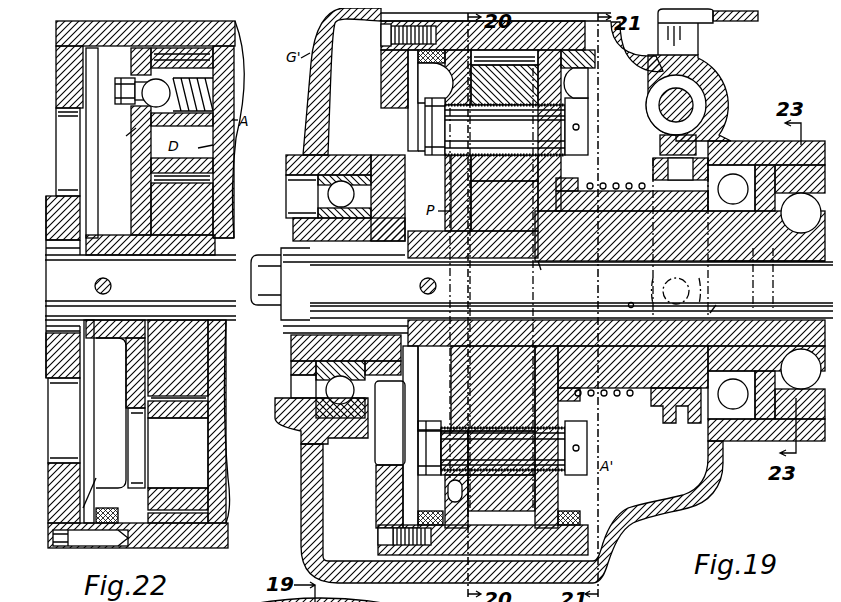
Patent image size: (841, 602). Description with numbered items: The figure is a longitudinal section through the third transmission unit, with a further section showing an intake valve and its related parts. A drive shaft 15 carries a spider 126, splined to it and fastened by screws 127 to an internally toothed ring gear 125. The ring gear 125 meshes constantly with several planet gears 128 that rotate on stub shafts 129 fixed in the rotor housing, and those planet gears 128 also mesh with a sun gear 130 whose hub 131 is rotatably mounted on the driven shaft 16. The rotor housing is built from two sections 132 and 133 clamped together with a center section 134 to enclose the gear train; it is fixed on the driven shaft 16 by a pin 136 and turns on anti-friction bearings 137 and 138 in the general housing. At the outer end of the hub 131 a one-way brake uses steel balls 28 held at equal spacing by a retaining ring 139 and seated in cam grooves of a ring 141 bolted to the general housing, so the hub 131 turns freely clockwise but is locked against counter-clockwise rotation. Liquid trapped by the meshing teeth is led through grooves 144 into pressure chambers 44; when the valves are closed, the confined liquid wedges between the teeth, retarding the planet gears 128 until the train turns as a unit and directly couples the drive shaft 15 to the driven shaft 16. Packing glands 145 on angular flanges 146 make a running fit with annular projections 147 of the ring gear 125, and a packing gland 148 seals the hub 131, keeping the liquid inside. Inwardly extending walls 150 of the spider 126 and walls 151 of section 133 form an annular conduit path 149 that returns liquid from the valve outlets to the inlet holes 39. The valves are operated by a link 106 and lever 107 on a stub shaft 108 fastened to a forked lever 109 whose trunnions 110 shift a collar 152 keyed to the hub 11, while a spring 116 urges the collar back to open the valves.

In FIG. 19, the hub 11 is at (721, 303).
In FIG. 22, the drive shaft 15 is at (70, 343).
In FIG. 19, the drive shaft 15 is at (258, 305).
In FIG. 22, the driven shaft 16 is at (140, 287).
In FIG. 19, the driven shaft 16 is at (558, 297).
In FIG. 19, the steel balls 28 is at (680, 236).
In FIG. 22, the holes 39 is at (121, 140).
In FIG. 22, the pressure chambers 44 is at (224, 140).
In FIG. 19, the link 106 is at (748, 14).
In FIG. 19, the lever 107 is at (692, 34).
In FIG. 19, the stub shaft 108 is at (651, 97).
In FIG. 19, the forked lever 109 is at (652, 136).
In FIG. 19, the trunnions 110 is at (655, 283).
In FIG. 19, the spring 116 is at (628, 407).
In FIG. 22, the ring gear 125 is at (178, 540).
In FIG. 19, the ring gear 125 is at (513, 510).
In FIG. 22, the spider 126 is at (64, 162).
In FIG. 19, the spider 126 is at (378, 90).
In FIG. 19, the screws 127 is at (375, 26).
In FIG. 19, the planet gears 128 is at (503, 333).
In FIG. 19, the stub shafts 129 is at (503, 286).
In FIG. 22, the sun gear 130 is at (172, 170).
In FIG. 19, the sun gear 130 is at (473, 219).
In FIG. 22, the hub 131 is at (212, 233).
In FIG. 19, the hub 131 is at (727, 252).
In FIG. 22, the rotor housing section 132 is at (118, 413).
In FIG. 19, the rotor housing section 132 is at (442, 378).
In FIG. 22, the rotor housing section 133 is at (212, 415).
In FIG. 19, the rotor housing section 133 is at (576, 396).
In FIG. 22, the center section 134 is at (160, 482).
In FIG. 22, the pin 136 is at (110, 266).
In FIG. 19, the pin 136 is at (429, 280).
In FIG. 19, the anti-friction bearing 137 is at (335, 397).
In FIG. 19, the anti-friction bearing 138 is at (716, 422).
In FIG. 19, the retaining ring 139 is at (616, 333).
In FIG. 19, the ring 141 is at (778, 136).
In FIG. 22, the grooves 144 is at (100, 540).
In FIG. 19, the packing glands 145 is at (405, 512).
In FIG. 19, the angular flanges 146 is at (408, 490).
In FIG. 22, the annular projections 147 is at (80, 66).
In FIG. 19, the annular projections 147 is at (390, 544).
In FIG. 19, the packing gland 148 is at (551, 274).
In FIG. 22, the annular conduit path 149 is at (78, 512).
In FIG. 19, the annular conduit path 149 is at (422, 70).
In FIG. 22, the inwardly extending walls 150 is at (60, 470).
In FIG. 22, the inwardly extending walls 151 is at (218, 460).
In FIG. 19, the collar 152 is at (648, 160).